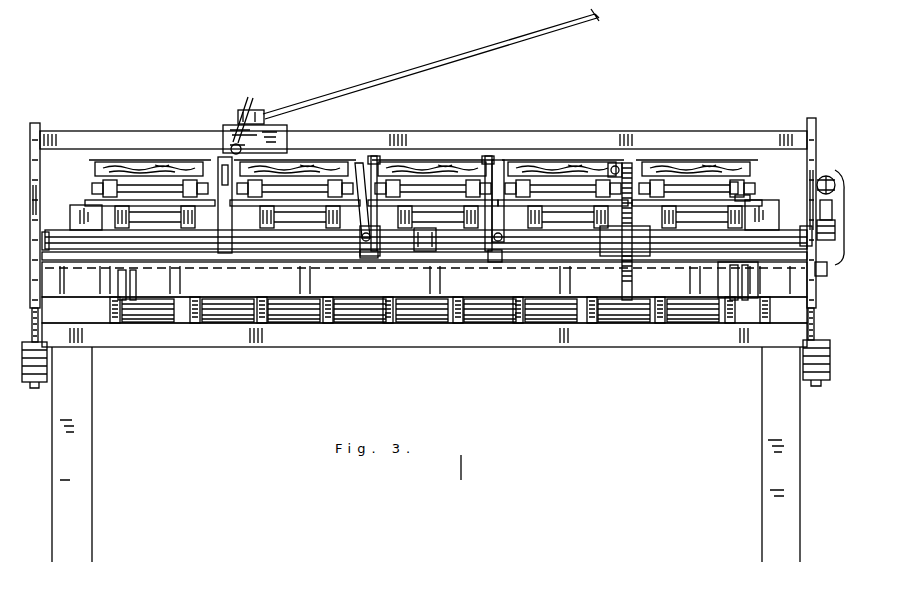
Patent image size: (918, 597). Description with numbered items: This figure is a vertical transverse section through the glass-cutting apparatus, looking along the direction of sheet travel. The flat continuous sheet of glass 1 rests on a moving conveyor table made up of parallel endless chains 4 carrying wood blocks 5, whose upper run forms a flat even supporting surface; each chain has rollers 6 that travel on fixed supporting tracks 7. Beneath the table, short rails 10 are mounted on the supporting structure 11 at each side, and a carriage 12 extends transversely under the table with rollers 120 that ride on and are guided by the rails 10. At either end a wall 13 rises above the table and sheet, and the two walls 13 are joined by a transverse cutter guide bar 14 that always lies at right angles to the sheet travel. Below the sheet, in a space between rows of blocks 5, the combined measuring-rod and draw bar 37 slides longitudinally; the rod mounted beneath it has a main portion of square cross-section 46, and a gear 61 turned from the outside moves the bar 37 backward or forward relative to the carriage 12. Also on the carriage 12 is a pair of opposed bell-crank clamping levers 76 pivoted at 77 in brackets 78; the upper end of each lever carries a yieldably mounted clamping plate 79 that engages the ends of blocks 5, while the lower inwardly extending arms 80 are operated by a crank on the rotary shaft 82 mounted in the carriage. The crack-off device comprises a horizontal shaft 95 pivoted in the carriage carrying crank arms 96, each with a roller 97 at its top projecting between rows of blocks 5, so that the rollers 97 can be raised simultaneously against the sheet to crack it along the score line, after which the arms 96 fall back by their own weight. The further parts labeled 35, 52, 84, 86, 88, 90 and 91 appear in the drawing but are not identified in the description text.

The sheet of glass 1 is at (388, 165).
The endless chains 4 is at (688, 192).
The wood blocks 5 is at (148, 165).
The rollers 6 is at (736, 186).
The supporting tracks 7 is at (742, 197).
The short rails 10 is at (122, 318).
The supporting structure 11 is at (778, 407).
The carriage 12 is at (450, 290).
The wall 13 is at (37, 150).
The cutter guide bar 14 is at (628, 140).
The operating lever 35 is at (456, 63).
The combined measuring-rod and draw bar 37 is at (630, 165).
The square cross-section portion of rod 46 is at (615, 165).
The stop block 52 is at (820, 276).
The gear 61 is at (604, 300).
The bell-crank clamping levers 76 is at (360, 228).
The pivot 77 is at (462, 234).
The brackets 78 is at (374, 252).
The clamping plate 79 is at (372, 158).
The lower inwardly extending arms 80 is at (397, 233).
The rotary shaft 82 is at (538, 238).
The bearing 84 is at (805, 238).
The ratchet wheel 86 is at (827, 176).
The pawl 88 is at (820, 175).
The counterweight 90 is at (35, 388).
The hanger strap 91 is at (40, 330).
The horizontal shaft 95 is at (278, 242).
The crank arms 96 is at (220, 185).
The roller 97 is at (226, 168).
The rollers 120 is at (728, 292).